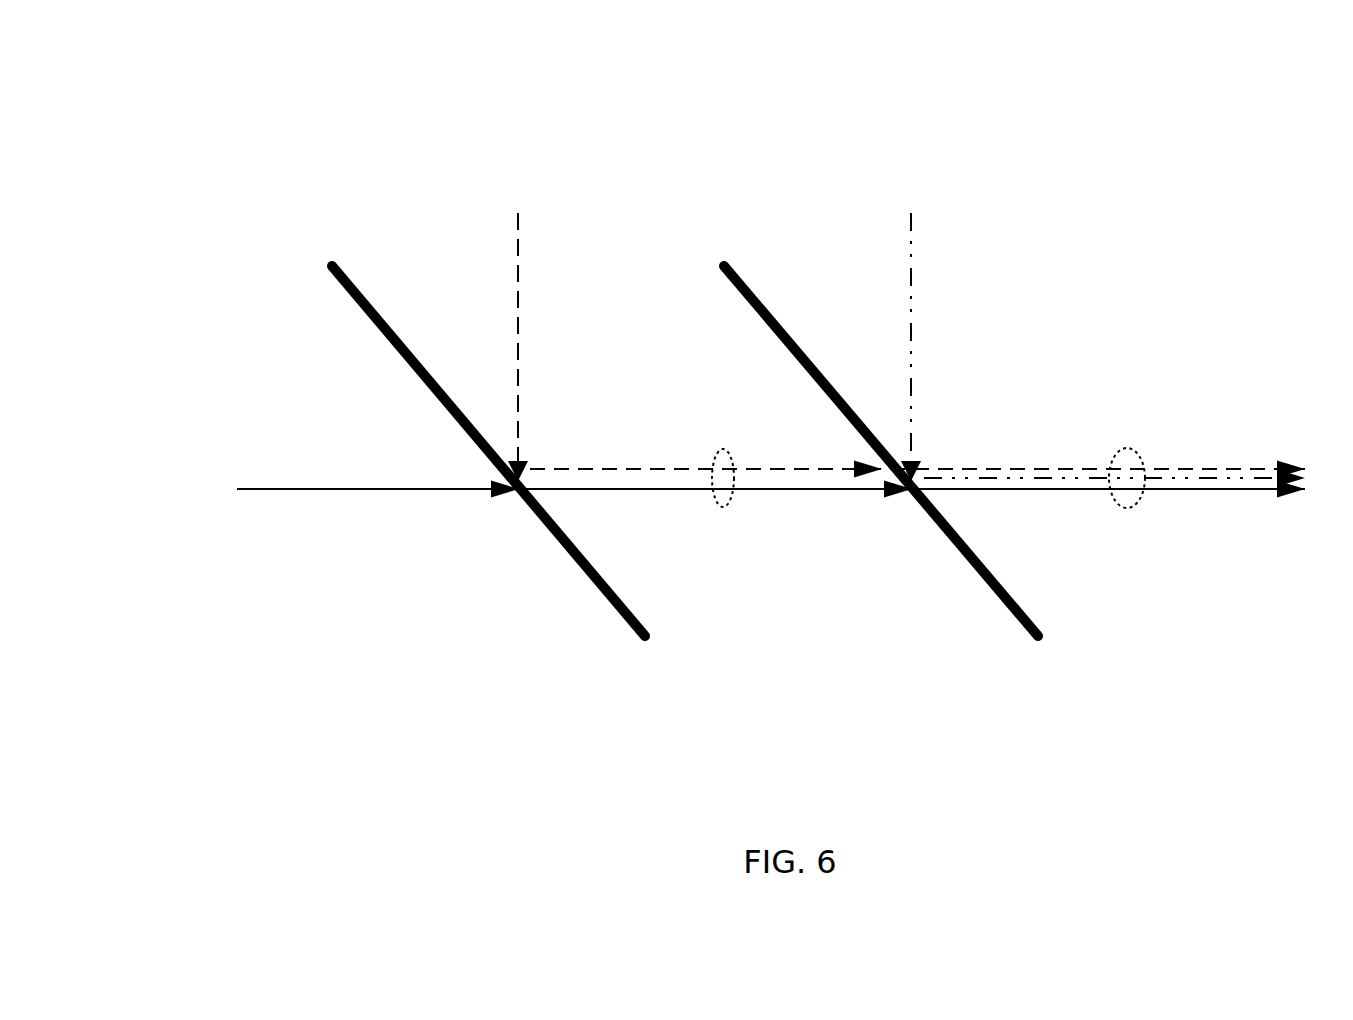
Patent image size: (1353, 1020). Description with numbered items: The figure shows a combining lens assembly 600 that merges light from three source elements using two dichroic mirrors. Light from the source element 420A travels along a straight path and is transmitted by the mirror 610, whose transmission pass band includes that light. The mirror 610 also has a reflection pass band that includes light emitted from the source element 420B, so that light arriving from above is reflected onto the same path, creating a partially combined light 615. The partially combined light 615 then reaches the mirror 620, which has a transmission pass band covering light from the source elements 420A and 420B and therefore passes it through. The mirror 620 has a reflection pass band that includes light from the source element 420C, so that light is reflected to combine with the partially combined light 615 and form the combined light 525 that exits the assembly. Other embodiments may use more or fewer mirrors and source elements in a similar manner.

The combining lens assembly 600 is at (128, 86).
The source element 420A is at (153, 532).
The source element 420B is at (481, 190).
The source element 420C is at (883, 190).
The mirror 610 is at (585, 572).
The mirror 620 is at (1030, 615).
The partially combined light 615 is at (737, 497).
The combined light 525 is at (1145, 470).